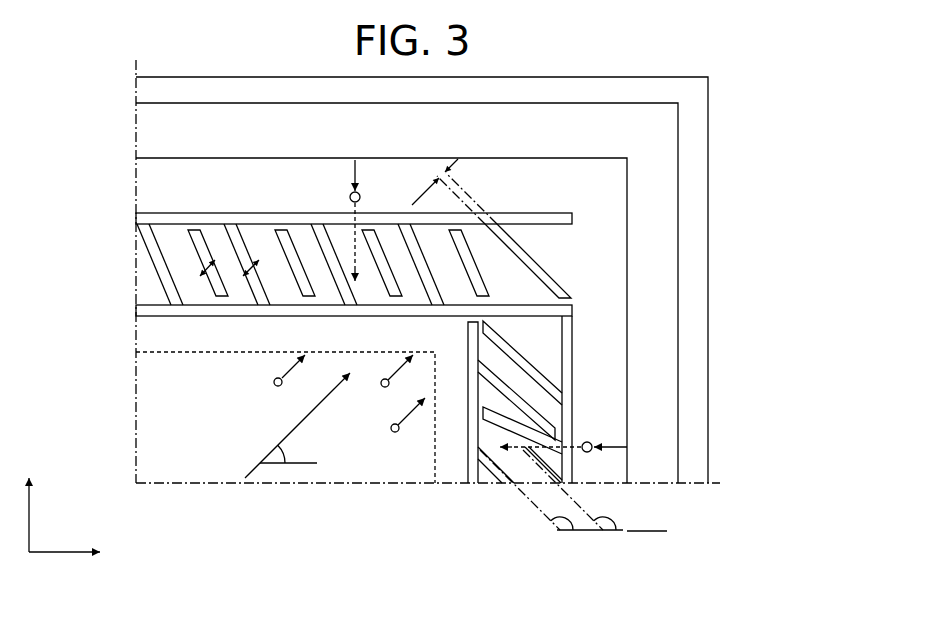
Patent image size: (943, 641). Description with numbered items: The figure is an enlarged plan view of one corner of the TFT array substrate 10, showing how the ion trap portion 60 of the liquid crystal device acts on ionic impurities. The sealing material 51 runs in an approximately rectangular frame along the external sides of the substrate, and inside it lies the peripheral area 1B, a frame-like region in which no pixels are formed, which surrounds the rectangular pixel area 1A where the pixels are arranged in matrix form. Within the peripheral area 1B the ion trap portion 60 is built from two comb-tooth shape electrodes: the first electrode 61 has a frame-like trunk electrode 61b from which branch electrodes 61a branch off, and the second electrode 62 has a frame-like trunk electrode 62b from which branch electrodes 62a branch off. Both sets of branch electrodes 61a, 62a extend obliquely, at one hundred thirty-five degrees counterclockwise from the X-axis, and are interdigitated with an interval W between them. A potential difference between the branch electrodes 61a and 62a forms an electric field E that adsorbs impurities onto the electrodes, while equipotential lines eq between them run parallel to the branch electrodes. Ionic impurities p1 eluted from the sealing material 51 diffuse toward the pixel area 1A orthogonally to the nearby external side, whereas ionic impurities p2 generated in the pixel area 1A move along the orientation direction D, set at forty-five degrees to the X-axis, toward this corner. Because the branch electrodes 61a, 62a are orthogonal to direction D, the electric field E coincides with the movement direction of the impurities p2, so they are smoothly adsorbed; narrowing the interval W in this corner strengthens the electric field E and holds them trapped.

The TFT array substrate 10 is at (708, 92).
The sealing material 51 is at (667, 138).
The ion trap portion 60 is at (475, 366).
The first electrode 61 is at (450, 394).
The branch electrodes 61a is at (508, 347).
The trunk electrode 61b is at (565, 403).
The second electrode 62 is at (450, 366).
The branch electrodes 62a is at (533, 268).
The trunk electrode 62b is at (515, 213).
The pixel area 1A is at (125, 347).
The peripheral area 1B is at (125, 157).
The ionic impurities p1 is at (350, 195).
The ionic impurities p2 is at (275, 385).
The electric field E is at (251, 266).
The interval W is at (426, 183).
The orientation direction D is at (260, 468).
The equipotential lines eq is at (214, 234).